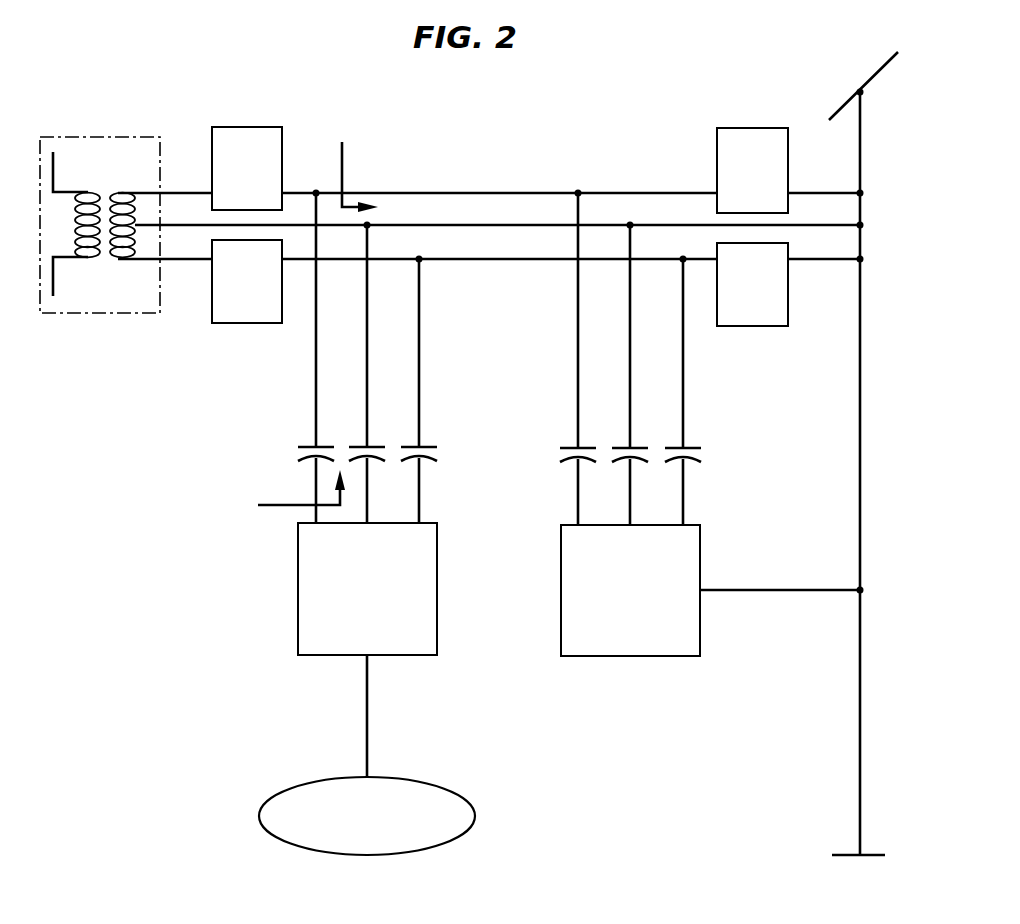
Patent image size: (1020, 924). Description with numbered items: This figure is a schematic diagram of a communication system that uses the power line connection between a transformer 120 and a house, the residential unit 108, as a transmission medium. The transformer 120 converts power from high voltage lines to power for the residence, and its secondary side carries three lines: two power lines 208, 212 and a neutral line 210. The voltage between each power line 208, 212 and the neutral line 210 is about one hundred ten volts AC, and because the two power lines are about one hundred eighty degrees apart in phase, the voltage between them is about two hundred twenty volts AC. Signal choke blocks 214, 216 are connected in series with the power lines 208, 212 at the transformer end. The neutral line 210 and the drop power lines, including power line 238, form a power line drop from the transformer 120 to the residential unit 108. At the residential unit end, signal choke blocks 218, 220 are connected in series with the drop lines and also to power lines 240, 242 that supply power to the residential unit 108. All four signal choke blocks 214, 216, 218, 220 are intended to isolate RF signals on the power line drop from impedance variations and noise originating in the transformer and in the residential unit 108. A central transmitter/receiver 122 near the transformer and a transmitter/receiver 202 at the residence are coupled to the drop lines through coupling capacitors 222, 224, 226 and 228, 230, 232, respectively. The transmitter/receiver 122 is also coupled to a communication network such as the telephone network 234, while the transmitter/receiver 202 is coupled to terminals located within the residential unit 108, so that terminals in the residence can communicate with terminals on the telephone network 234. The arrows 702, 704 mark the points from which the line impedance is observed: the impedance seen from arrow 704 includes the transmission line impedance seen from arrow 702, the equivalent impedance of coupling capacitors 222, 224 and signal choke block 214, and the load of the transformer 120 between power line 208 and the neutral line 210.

The residential unit 108 is at (872, 78).
The transformer 120 is at (113, 137).
The transmitter/receiver 122 is at (298, 581).
The transmitter/receiver 202 is at (561, 583).
The power line 208 is at (186, 193).
The neutral line 210 is at (431, 225).
The power line 212 is at (180, 260).
The signal choke block 214 is at (253, 127).
The signal choke block 216 is at (260, 324).
The signal choke block 218 is at (752, 128).
The signal choke block 220 is at (752, 326).
The coupling capacitor 222 is at (305, 447).
The coupling capacitor 224 is at (378, 447).
The coupling capacitor 226 is at (430, 447).
The coupling capacitor 228 is at (568, 448).
The coupling capacitor 230 is at (640, 448).
The coupling capacitor 232 is at (700, 448).
The telephone network 234 is at (297, 783).
The power line 238 is at (468, 259).
The power line 240 is at (836, 193).
The power line 242 is at (836, 261).
The arrow 702 is at (342, 152).
The arrow 704 is at (277, 505).